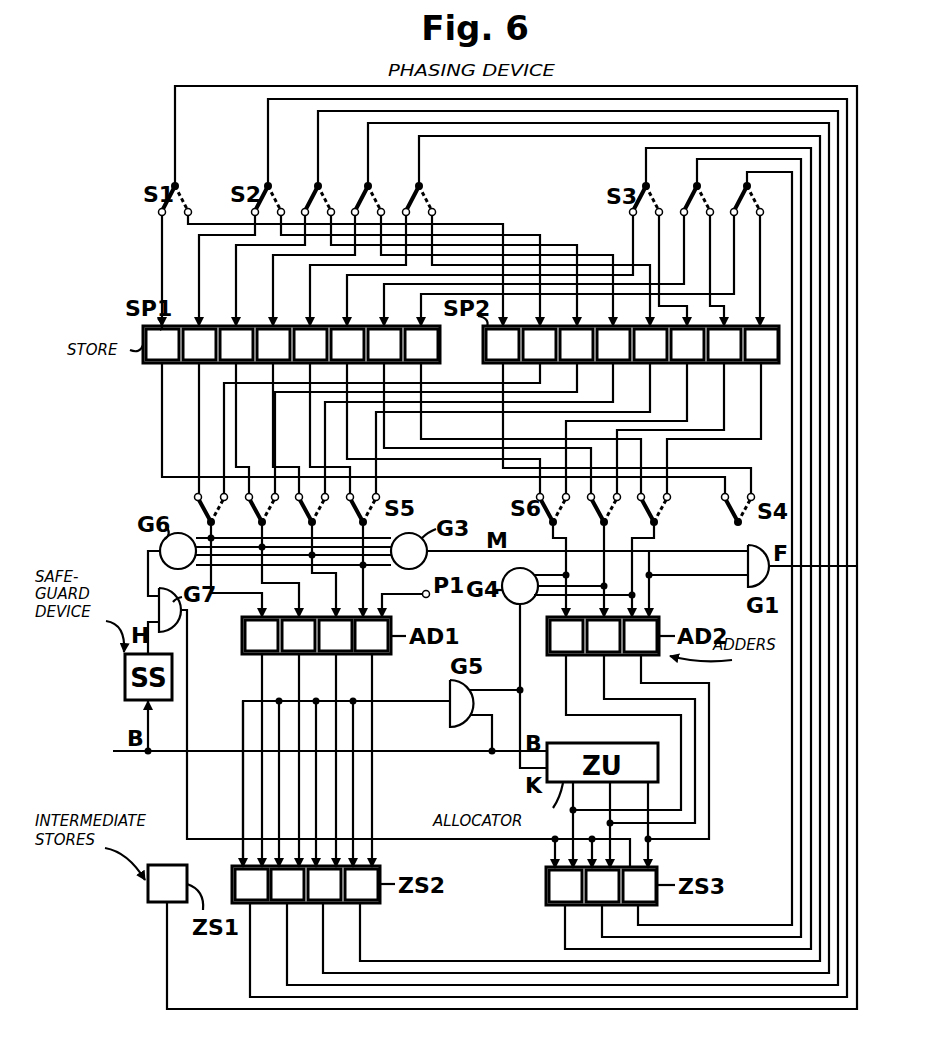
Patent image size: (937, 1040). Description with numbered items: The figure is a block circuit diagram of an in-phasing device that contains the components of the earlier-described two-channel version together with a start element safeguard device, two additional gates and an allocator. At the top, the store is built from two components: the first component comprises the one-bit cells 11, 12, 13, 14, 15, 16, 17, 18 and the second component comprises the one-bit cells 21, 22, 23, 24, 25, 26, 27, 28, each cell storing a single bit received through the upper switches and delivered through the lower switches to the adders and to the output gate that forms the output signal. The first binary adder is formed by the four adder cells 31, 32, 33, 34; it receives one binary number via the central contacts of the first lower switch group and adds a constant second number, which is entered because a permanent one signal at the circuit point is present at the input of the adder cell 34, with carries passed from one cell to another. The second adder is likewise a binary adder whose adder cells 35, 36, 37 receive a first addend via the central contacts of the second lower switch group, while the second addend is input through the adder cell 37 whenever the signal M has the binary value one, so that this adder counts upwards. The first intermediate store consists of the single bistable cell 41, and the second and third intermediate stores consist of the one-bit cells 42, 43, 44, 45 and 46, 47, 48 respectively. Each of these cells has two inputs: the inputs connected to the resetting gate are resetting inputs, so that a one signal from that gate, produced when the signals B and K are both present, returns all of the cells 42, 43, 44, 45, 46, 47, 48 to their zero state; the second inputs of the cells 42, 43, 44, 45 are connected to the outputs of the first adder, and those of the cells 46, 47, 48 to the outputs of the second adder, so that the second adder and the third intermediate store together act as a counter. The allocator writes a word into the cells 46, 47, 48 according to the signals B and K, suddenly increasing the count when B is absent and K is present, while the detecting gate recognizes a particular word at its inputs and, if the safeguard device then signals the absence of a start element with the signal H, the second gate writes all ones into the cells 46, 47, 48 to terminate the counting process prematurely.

The cell 11 is at (162, 345).
The cell 12 is at (199, 345).
The cell 13 is at (236, 345).
The cell 14 is at (273, 345).
The cell 15 is at (310, 345).
The cell 16 is at (347, 345).
The cell 17 is at (384, 345).
The cell 18 is at (421, 345).
The cell 21 is at (502, 345).
The cell 22 is at (539, 345).
The cell 23 is at (576, 345).
The cell 24 is at (613, 345).
The cell 25 is at (650, 345).
The cell 26 is at (687, 345).
The cell 27 is at (724, 345).
The cell 28 is at (761, 345).
The adder cell 31 is at (261, 636).
The adder cell 32 is at (298, 636).
The adder cell 33 is at (335, 636).
The adder cell 34 is at (371, 636).
The adder cell 35 is at (566, 636).
The adder cell 36 is at (603, 636).
The adder cell 37 is at (640, 636).
The cell 41 is at (167, 883).
The cell 42 is at (251, 885).
The cell 43 is at (287, 885).
The cell 44 is at (324, 885).
The cell 45 is at (361, 885).
The cell 46 is at (565, 886).
The cell 47 is at (602, 886).
The cell 48 is at (639, 886).